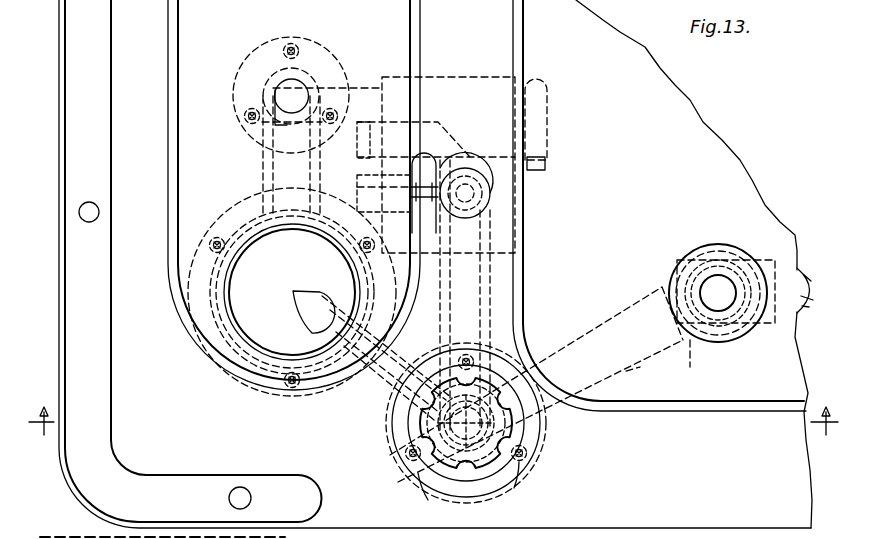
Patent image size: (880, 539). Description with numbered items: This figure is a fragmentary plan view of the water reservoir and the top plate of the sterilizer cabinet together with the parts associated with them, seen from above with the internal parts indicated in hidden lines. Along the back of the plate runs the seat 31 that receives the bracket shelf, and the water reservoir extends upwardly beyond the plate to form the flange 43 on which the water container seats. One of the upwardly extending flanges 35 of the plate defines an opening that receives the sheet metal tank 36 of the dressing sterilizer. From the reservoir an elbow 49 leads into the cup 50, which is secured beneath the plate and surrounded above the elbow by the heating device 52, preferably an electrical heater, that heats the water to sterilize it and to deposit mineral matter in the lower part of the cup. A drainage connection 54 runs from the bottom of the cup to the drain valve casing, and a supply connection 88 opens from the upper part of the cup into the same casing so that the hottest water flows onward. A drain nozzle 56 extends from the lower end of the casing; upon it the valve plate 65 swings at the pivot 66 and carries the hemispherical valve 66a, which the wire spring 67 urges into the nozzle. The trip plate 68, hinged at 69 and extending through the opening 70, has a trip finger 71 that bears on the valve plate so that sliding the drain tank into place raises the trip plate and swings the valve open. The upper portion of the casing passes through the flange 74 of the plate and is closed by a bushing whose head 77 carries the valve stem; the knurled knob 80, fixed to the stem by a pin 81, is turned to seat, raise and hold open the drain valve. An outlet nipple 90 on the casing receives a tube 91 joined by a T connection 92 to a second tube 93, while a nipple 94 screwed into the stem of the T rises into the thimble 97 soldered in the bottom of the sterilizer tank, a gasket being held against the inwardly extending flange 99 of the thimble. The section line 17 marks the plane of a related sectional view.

The section line 17 is at (433, 433).
The seat 31 is at (212, 480).
The upwardly extending flange 35 is at (684, 412).
The sheet metal tank 36 is at (616, 26).
The flange 43 is at (166, 243).
The elbow 49 is at (262, 160).
The cup 50 is at (266, 296).
The heating device 52 is at (215, 318).
The drainage connection 54 is at (330, 333).
The drain nozzle 56 is at (494, 298).
The valve plate 65 is at (455, 130).
The pivot 66 is at (414, 229).
The hemispherical valve 66a is at (470, 174).
The wire spring 67 is at (358, 186).
The trip plate 68 is at (352, 88).
The hinge 69 is at (544, 170).
The opening 70 is at (446, 78).
The trip finger 71 is at (358, 146).
The flange 74 is at (534, 451).
The head 77 is at (512, 487).
The knurled knob 80 is at (437, 459).
The pin 81 is at (402, 433).
The supply connection 88 is at (378, 392).
The outlet nipple 90 is at (544, 423).
The tube 91 is at (633, 362).
The T connection 92 is at (691, 363).
The second tube 93 is at (783, 320).
The nipple 94 is at (718, 332).
The thimble 97 is at (722, 244).
The inwardly extending flange 99 is at (690, 252).